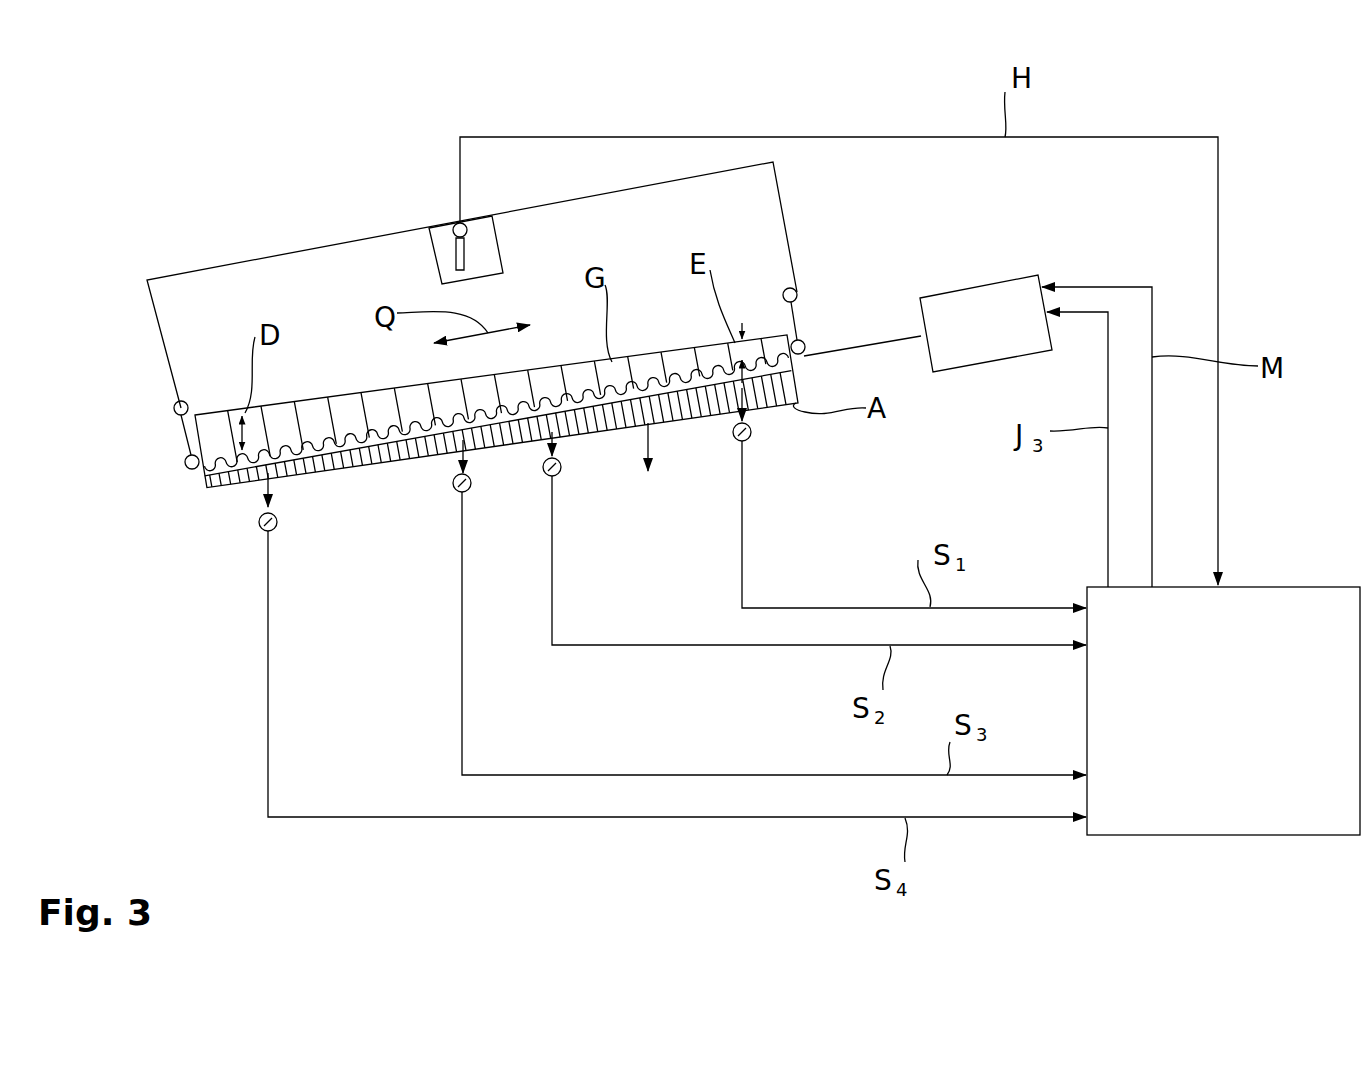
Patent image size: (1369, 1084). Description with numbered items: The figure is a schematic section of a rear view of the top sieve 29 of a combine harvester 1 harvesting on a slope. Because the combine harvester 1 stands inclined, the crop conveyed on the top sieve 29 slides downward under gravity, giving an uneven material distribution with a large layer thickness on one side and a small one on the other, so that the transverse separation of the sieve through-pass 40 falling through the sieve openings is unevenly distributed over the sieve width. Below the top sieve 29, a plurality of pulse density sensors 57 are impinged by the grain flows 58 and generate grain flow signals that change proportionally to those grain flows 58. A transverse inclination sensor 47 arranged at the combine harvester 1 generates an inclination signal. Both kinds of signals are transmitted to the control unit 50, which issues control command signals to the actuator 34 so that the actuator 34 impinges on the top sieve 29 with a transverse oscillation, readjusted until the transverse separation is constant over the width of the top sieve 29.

The combine harvester 1 is at (148, 307).
The top sieve 29 is at (190, 482).
The actuator 34 is at (1003, 339).
The sieve through-pass 40 is at (652, 445).
The transverse inclination sensor 47 is at (445, 250).
The control unit 50 is at (1241, 728).
The pulse density sensors 57 is at (261, 529).
The grain flows 58 is at (263, 489).